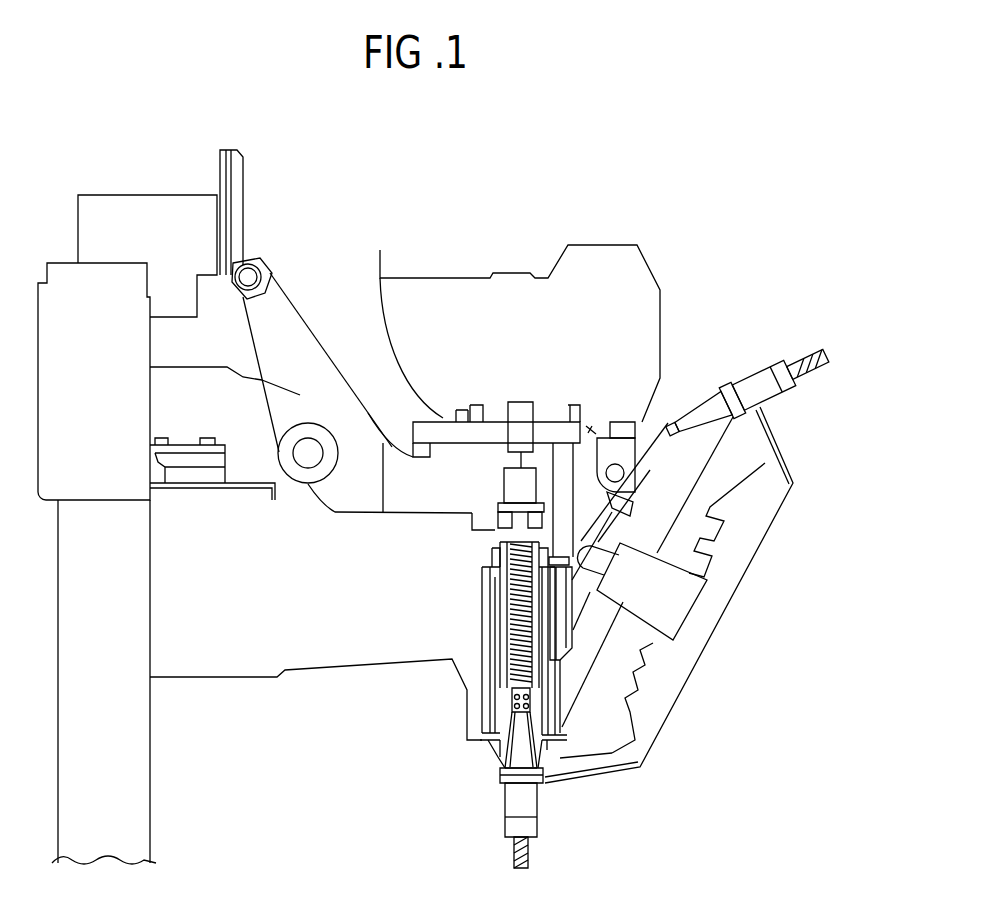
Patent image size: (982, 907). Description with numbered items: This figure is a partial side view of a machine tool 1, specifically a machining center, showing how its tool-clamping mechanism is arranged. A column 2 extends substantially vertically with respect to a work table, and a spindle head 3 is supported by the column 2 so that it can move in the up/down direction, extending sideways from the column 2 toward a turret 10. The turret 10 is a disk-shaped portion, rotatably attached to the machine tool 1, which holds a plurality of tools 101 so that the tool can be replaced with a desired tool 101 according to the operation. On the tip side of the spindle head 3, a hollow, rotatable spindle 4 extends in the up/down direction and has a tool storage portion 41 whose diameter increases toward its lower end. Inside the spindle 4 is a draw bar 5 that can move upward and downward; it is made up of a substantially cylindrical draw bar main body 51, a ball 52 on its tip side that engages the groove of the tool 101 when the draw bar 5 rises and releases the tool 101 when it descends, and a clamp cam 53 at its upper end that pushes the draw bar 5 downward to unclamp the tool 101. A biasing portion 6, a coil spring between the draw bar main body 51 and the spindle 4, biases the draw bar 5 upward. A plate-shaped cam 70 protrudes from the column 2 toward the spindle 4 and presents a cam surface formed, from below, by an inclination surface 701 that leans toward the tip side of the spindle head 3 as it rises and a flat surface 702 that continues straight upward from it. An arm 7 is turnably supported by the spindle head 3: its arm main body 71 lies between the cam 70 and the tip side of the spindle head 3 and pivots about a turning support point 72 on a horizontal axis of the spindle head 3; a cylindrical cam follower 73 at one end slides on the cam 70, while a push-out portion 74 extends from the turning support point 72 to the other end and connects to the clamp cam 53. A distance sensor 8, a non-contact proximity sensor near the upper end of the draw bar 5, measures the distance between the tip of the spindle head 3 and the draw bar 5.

The machine tool 1 is at (662, 160).
The column 2 is at (112, 760).
The spindle head 3 is at (305, 585).
The spindle 4 is at (507, 695).
The draw bar 5 is at (530, 690).
The biasing portion 6 is at (506, 602).
The arm 7 is at (299, 316).
The distance sensor 8 is at (582, 424).
The turret 10 is at (703, 627).
The tool storage portion 41 is at (505, 755).
The draw bar main body 51 is at (504, 532).
The ball 52 is at (511, 709).
The clamp cam 53 is at (497, 488).
The cam 70 is at (312, 194).
The inclination surface 701 is at (236, 264).
The flat surface 702 is at (243, 180).
The arm main body 71 is at (336, 366).
The turning support point 72 is at (305, 462).
The cam follower 73 is at (264, 264).
The push-out portion 74 is at (497, 475).
The tool 101 is at (537, 812).